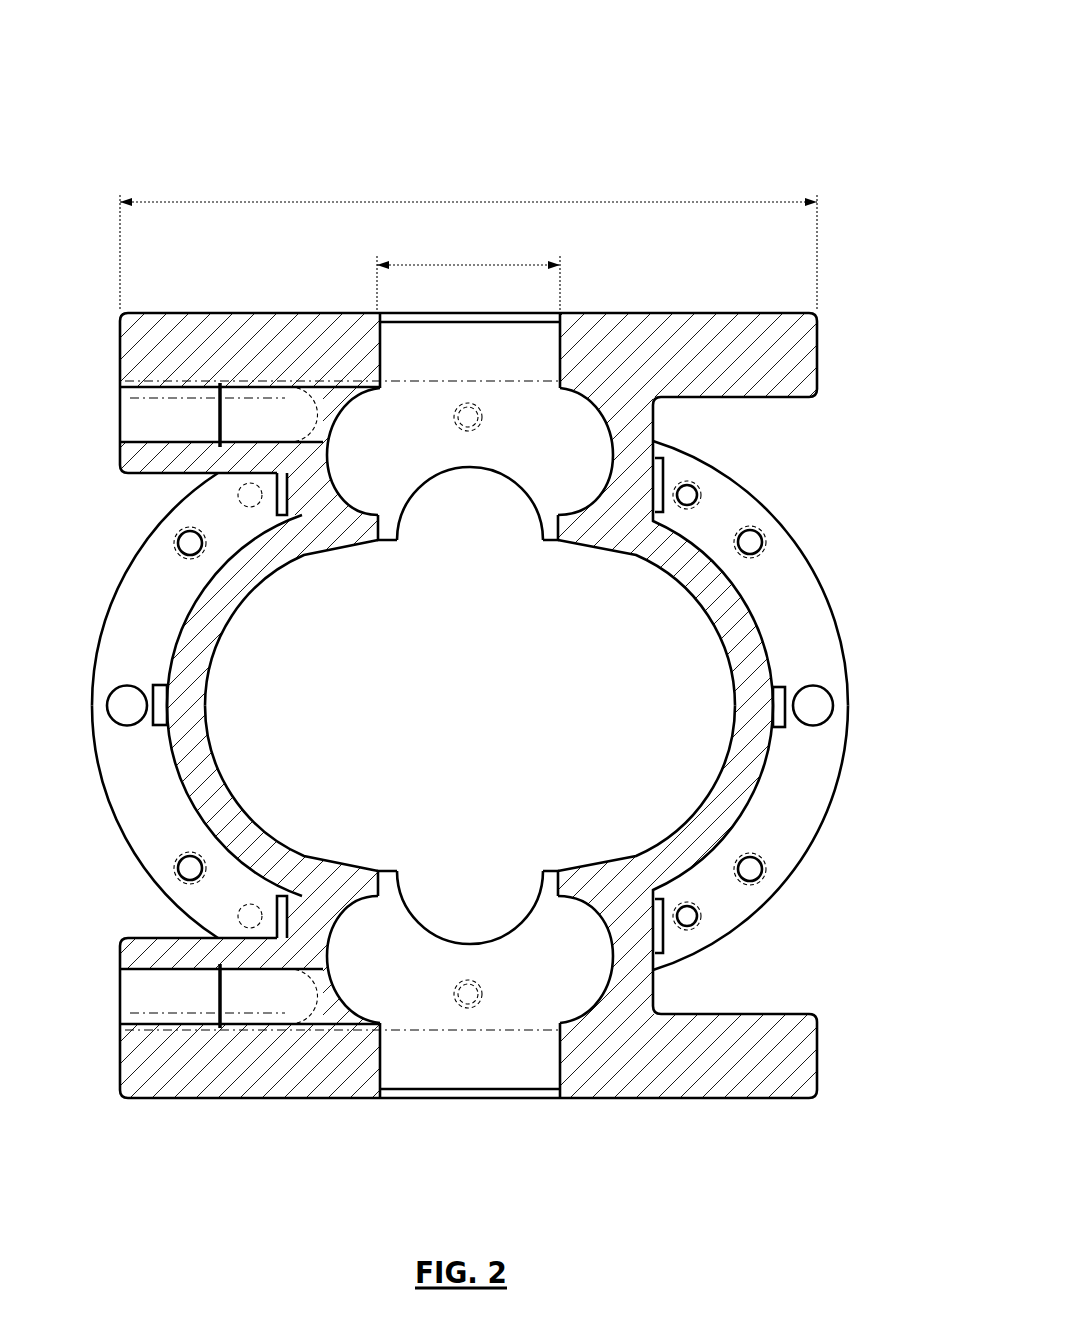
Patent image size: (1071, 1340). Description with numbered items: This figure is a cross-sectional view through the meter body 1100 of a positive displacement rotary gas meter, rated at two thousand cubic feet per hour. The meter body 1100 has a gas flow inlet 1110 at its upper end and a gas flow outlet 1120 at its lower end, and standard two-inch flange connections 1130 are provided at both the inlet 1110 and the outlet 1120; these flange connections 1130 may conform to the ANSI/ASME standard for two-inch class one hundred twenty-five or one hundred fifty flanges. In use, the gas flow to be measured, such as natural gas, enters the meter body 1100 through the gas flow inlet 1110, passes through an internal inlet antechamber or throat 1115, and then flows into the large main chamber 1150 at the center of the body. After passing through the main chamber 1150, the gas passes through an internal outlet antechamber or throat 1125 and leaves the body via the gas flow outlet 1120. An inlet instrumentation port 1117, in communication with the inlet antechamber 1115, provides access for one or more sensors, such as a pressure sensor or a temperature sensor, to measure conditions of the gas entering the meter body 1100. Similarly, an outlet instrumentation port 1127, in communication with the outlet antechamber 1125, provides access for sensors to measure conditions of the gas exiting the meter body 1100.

The meter body 1100 is at (731, 55).
The gas flow inlet 1110 is at (525, 330).
The inlet antechamber or throat 1115 is at (585, 437).
The inlet instrumentation port 1117 is at (245, 423).
The gas flow outlet 1120 is at (518, 1073).
The outlet antechamber or throat 1125 is at (577, 990).
The outlet instrumentation port 1127 is at (247, 993).
The flange connections 1130 is at (770, 310).
The main chamber 1150 is at (700, 677).